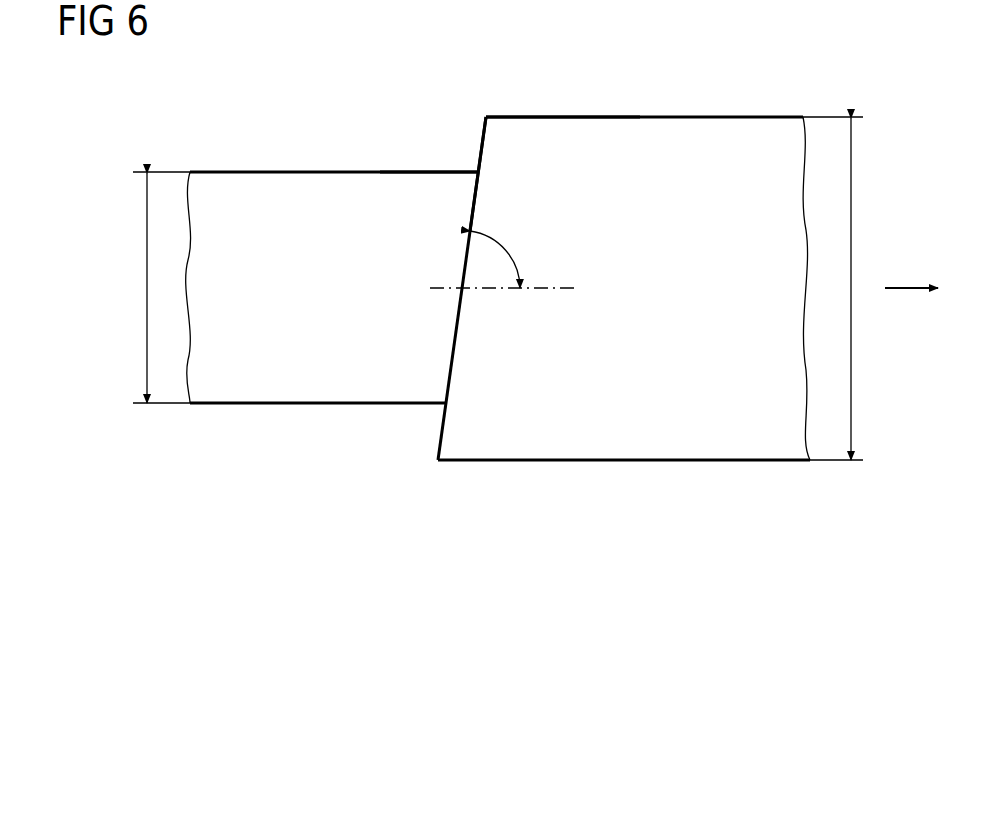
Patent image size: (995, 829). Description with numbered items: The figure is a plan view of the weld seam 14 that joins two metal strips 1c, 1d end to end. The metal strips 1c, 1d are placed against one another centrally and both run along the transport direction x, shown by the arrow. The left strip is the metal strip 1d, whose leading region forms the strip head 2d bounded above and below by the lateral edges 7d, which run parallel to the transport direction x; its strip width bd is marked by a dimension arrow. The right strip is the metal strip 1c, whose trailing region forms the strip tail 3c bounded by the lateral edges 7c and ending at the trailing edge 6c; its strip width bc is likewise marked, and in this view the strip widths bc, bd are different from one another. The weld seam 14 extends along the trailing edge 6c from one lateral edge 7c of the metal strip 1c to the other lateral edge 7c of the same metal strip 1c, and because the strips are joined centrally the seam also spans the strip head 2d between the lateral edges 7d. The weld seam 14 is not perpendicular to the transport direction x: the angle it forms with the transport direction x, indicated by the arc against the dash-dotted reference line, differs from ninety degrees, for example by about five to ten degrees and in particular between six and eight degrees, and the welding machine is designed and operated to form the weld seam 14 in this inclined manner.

The metal strip 1d is at (264, 190).
The lateral edge 7d is at (347, 176).
The strip head 2d is at (415, 192).
The metal strip 1c is at (755, 136).
The lateral edge 7c is at (663, 118).
The strip tail 3c is at (588, 136).
The trailing edge 6c is at (488, 141).
The weld seam 14 is at (453, 360).
The strip width bd is at (147, 274).
The strip width bc is at (851, 362).
The transport direction x is at (901, 287).